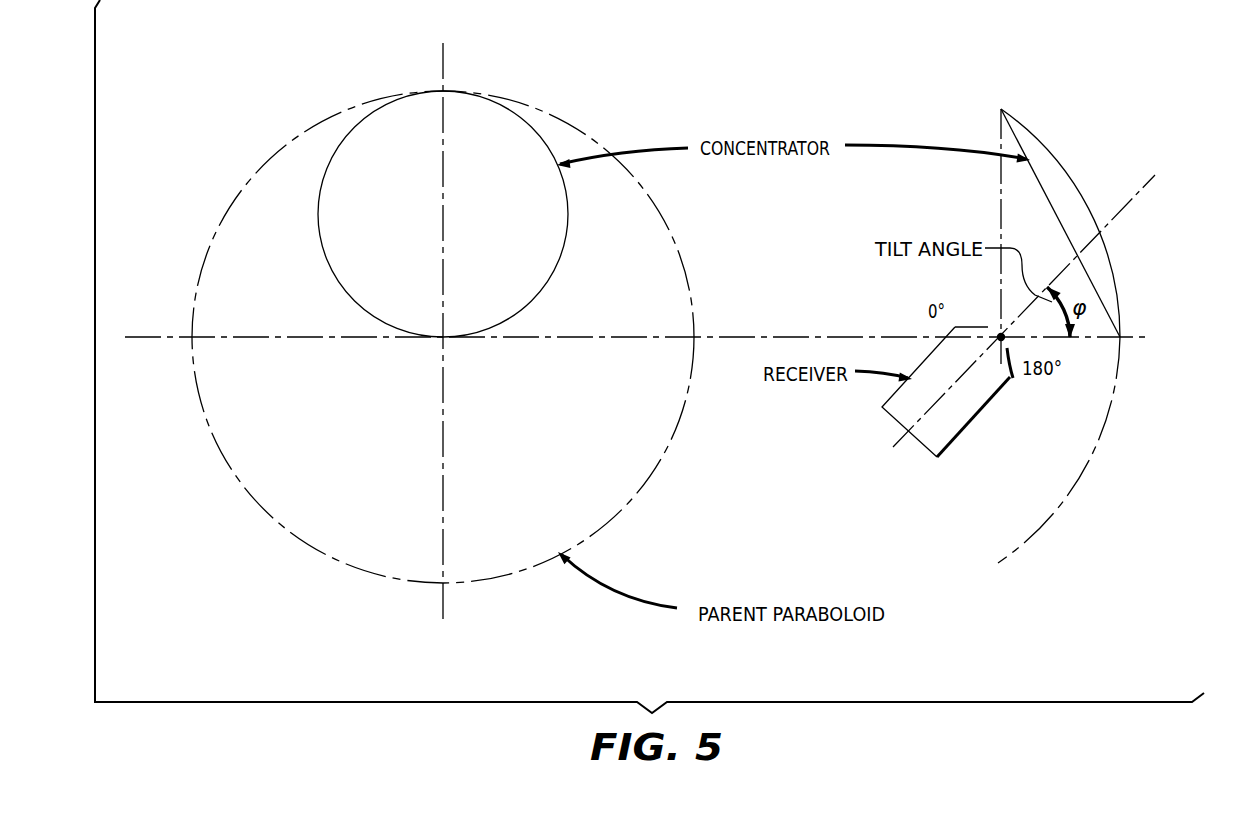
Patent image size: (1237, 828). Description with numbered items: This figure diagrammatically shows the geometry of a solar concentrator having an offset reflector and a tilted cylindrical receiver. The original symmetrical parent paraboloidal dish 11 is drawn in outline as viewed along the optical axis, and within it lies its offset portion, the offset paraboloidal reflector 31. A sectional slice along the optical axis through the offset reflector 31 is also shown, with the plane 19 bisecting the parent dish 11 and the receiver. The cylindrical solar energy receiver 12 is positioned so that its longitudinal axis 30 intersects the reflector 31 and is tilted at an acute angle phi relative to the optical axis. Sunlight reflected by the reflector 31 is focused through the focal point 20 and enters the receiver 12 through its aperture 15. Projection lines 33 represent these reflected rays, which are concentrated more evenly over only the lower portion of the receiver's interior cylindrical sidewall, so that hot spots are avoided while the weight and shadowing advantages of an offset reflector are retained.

The paraboloidal reflector dish 11 is at (645, 489).
The cylindrical solar energy receiver 12 is at (963, 428).
The aperture 15 is at (1000, 335).
The plane 19 is at (443, 603).
The focal point 20 is at (1005, 335).
The longitudinal axis of the cylindrical receiver 30 is at (1122, 213).
The offset paraboloidal reflector 31 is at (476, 92).
The projection lines 33 is at (1001, 128).